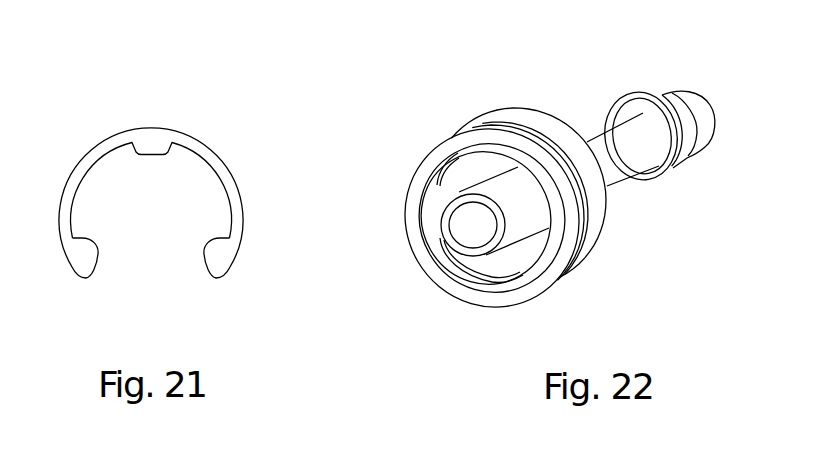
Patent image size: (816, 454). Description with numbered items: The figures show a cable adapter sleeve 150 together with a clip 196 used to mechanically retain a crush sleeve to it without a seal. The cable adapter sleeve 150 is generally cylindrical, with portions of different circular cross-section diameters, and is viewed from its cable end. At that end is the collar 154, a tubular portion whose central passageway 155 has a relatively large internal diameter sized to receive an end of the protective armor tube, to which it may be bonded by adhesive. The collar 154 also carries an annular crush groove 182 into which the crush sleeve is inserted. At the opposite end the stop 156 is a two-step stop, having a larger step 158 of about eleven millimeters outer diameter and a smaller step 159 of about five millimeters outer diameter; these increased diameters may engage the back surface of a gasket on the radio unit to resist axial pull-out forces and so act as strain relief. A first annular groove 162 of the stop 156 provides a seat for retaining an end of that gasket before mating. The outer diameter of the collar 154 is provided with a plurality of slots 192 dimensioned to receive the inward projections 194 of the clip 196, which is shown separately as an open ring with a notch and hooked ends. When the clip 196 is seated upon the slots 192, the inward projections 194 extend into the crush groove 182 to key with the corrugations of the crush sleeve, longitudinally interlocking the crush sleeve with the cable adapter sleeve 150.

In FIG. 21, the inward projections 194 is at (148, 153).
In FIG. 21, the clip 196 is at (207, 152).
In FIG. 22, the cable adapter sleeve 150 is at (622, 167).
In FIG. 22, the collar 154 is at (535, 120).
In FIG. 22, the central passageway 155 is at (470, 228).
In FIG. 22, the stop 156 is at (657, 102).
In FIG. 22, the larger step 158 is at (687, 150).
In FIG. 22, the smaller step 159 is at (698, 107).
In FIG. 22, the first annular groove 162 is at (635, 113).
In FIG. 22, the annular crush groove 182 is at (488, 168).
In FIG. 22, the slots 192 is at (583, 218).